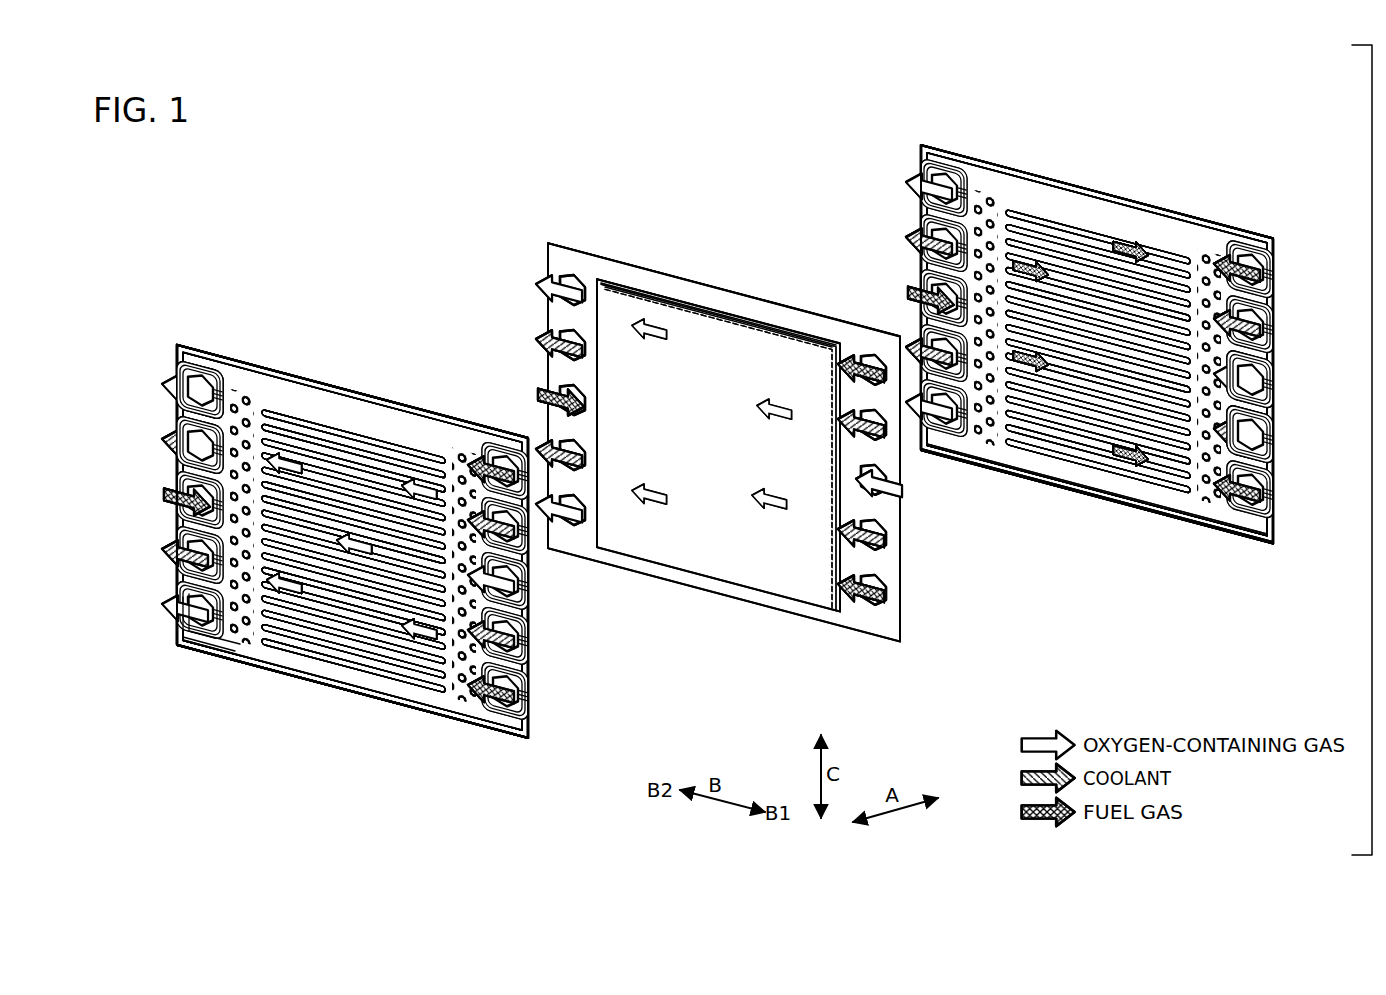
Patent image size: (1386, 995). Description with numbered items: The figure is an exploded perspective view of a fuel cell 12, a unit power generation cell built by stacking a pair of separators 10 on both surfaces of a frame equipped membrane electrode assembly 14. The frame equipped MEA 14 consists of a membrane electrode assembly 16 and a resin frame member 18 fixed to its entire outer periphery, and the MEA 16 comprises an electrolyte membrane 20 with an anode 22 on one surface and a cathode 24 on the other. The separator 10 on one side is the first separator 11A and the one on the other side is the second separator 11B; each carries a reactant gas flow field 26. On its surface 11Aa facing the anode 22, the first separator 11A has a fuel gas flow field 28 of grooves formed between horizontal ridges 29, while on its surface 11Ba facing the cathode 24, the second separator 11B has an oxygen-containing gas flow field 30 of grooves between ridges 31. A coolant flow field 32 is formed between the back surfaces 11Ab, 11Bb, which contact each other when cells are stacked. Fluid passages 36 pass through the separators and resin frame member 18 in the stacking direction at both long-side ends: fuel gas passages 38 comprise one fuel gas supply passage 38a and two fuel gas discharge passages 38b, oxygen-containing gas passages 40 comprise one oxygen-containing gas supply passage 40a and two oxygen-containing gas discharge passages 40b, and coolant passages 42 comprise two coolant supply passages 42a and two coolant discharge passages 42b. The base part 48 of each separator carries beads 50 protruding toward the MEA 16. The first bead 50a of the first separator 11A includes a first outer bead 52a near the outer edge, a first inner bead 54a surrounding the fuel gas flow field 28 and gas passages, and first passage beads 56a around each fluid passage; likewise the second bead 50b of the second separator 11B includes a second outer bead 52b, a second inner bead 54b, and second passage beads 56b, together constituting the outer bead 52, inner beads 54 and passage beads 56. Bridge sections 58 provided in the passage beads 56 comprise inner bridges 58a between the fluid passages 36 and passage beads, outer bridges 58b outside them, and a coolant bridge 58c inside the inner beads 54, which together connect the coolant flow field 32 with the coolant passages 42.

The fuel cell 12 is at (139, 218).
The separator 10 is at (725, 410).
The first separator 11A is at (1042, 170).
The second separator 11B is at (333, 385).
The surface of the first separator 11Aa is at (1200, 530).
The surface of the first separator 11Ab is at (1276, 527).
The surface of the second separator 11Ba is at (521, 742).
The surface of the second separator 11Bb is at (452, 692).
The frame equipped membrane electrode assembly 14 is at (708, 232).
The membrane electrode assembly 16 is at (781, 325).
The resin frame member 18 is at (714, 300).
The electrolyte membrane 20 is at (787, 322).
The anode 22 is at (683, 290).
The cathode 24 is at (628, 306).
The reactant gas flow field 26 is at (725, 412).
The fuel gas flow field 28 is at (1162, 285).
The ridges 29 is at (1072, 215).
The oxygen-containing gas flow field 30 is at (411, 447).
The ridges 31 is at (380, 420).
The coolant flow field 32 is at (346, 650).
The fluid passages 36 is at (197, 365).
The fuel gas passages 38 is at (692, 478).
The fuel gas supply passage 38a is at (196, 500).
The fuel gas discharge passages 38b is at (500, 455).
The oxygen-containing gas passages 40 is at (682, 418).
The oxygen-containing gas supply passage 40a is at (512, 595).
The oxygen-containing gas discharge passages 40b is at (196, 383).
The coolant passages 42 is at (682, 437).
The coolant supply passages 42a is at (512, 552).
The coolant discharge passages 42b is at (196, 442).
The base part 48 is at (315, 405).
The beads 50 is at (510, 384).
The first bead 50a is at (917, 152).
The second bead 50b is at (176, 350).
The outer bead 52 is at (725, 608).
The first outer bead 52a is at (1136, 500).
The second outer bead 52b is at (386, 690).
The inner beads 54 is at (725, 615).
The first inner bead 54a is at (1076, 478).
The second inner bead 54b is at (306, 668).
The passage beads 56 is at (768, 412).
The first passage beads 56a is at (1270, 470).
The second passage beads 56b is at (213, 440).
The bridge sections 58 is at (285, 724).
The inner bridges 58a is at (192, 642).
The outer bridges 58b is at (221, 634).
The coolant bridge 58c is at (238, 636).